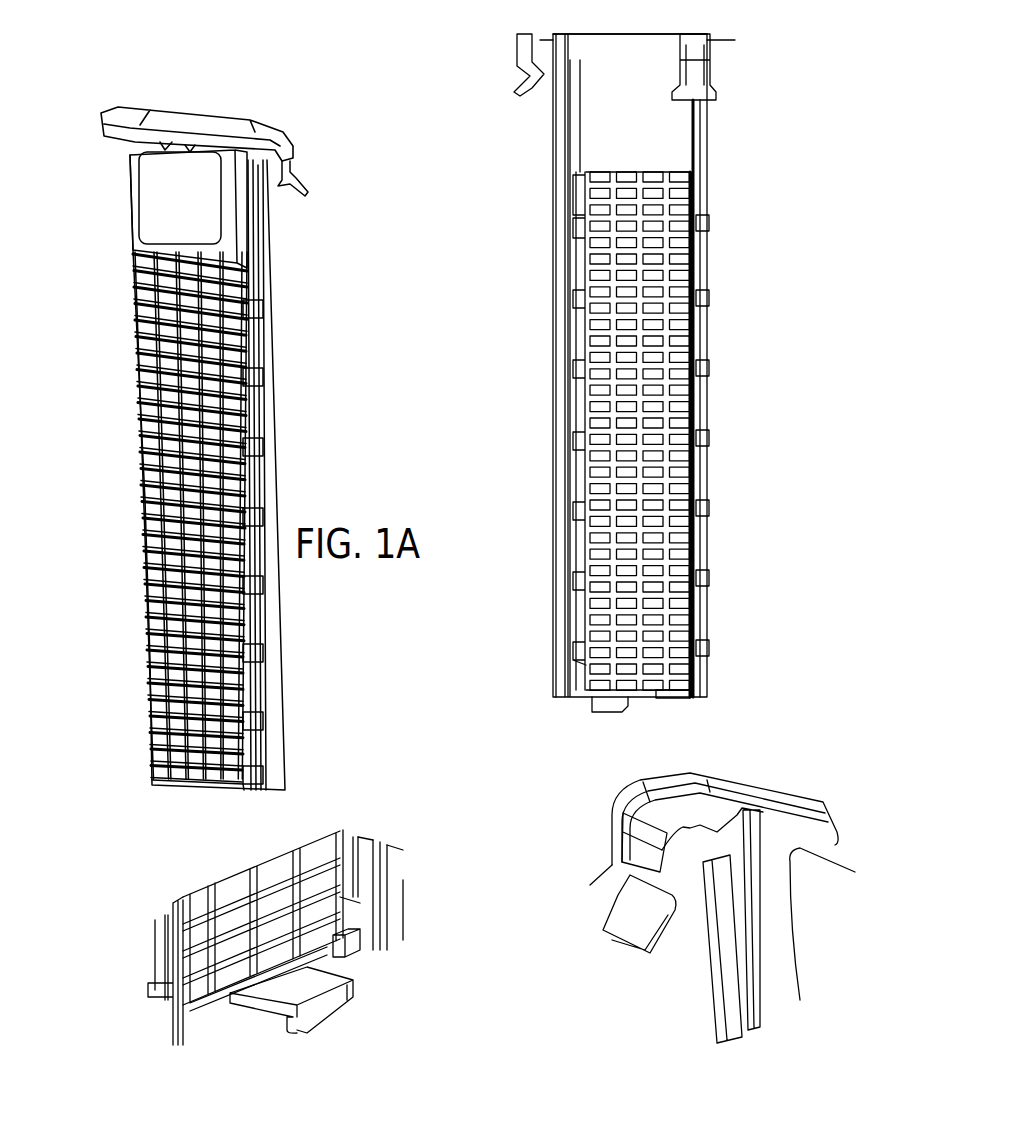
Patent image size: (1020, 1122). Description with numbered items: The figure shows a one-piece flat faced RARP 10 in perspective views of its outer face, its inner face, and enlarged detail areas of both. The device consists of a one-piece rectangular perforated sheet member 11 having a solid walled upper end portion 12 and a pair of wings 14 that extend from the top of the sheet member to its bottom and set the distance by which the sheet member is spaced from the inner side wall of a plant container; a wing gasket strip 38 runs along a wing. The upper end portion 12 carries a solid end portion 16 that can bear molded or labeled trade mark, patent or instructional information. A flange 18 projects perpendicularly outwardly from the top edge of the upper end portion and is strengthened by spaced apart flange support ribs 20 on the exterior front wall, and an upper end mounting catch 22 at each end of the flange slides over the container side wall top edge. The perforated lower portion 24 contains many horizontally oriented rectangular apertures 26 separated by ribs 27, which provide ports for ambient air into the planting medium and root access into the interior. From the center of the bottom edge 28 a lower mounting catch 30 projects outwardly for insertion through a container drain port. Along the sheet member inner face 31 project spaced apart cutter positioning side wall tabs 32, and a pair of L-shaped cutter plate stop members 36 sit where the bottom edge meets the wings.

In FIG. 1A, the flat faced RARP 10 is at (305, 446).
In FIG. 1B, the flat faced RARP 10 is at (728, 383).
In FIG. 1A, the rectangular perforated sheet member 11 is at (248, 615).
In FIG. 1B, the rectangular perforated sheet member 11 is at (596, 450).
In FIG. 1A, the solid upper end portion 12 is at (136, 222).
In FIG. 2B, the solid upper end portion 12 is at (775, 912).
In FIG. 1A, the wings 14 is at (273, 688).
In FIG. 1B, the wings 14 is at (702, 466).
In FIG. 2A, the wings 14 is at (406, 936).
In FIG. 2B, the wings 14 is at (726, 978).
In FIG. 1A, the solid end portion 16 is at (180, 198).
In FIG. 2B, the solid end portion 16 is at (822, 924).
In FIG. 1A, the flange 18 is at (168, 150).
In FIG. 1B, the flange 18 is at (735, 40).
In FIG. 1A, the flange support ribs 20 is at (185, 146).
In FIG. 1A, the upper end mounting catch 22 is at (300, 176).
In FIG. 1B, the upper end mounting catch 22 is at (716, 88).
In FIG. 2B, the upper end mounting catch 22 is at (616, 860).
In FIG. 1A, the perforated lower portion 24 is at (152, 598).
In FIG. 1A, the rectangular apertures 26 is at (160, 503).
In FIG. 1B, the rectangular apertures 26 is at (655, 264).
In FIG. 2A, the rectangular apertures 26 is at (310, 876).
In FIG. 1B, the ribs 27 is at (702, 562).
In FIG. 1A, the bottom edge 28 is at (176, 770).
In FIG. 1B, the bottom edge 28 is at (676, 700).
In FIG. 2A, the bottom edge 28 is at (195, 1010).
In FIG. 1B, the lower mounting catch 30 is at (600, 703).
In FIG. 2A, the lower mounting catch 30 is at (335, 1002).
In FIG. 1B, the sheet member inner face 31 is at (665, 614).
In FIG. 2A, the cutter positioning side wall tabs 32 is at (363, 880).
In FIG. 1B, the cutter plate stop members 36 is at (577, 622).
In FIG. 2A, the cutter plate stop members 36 is at (348, 946).
In FIG. 1A, the wing gasket strip 38 is at (272, 347).
In FIG. 1B, the wing gasket strip 38 is at (553, 512).